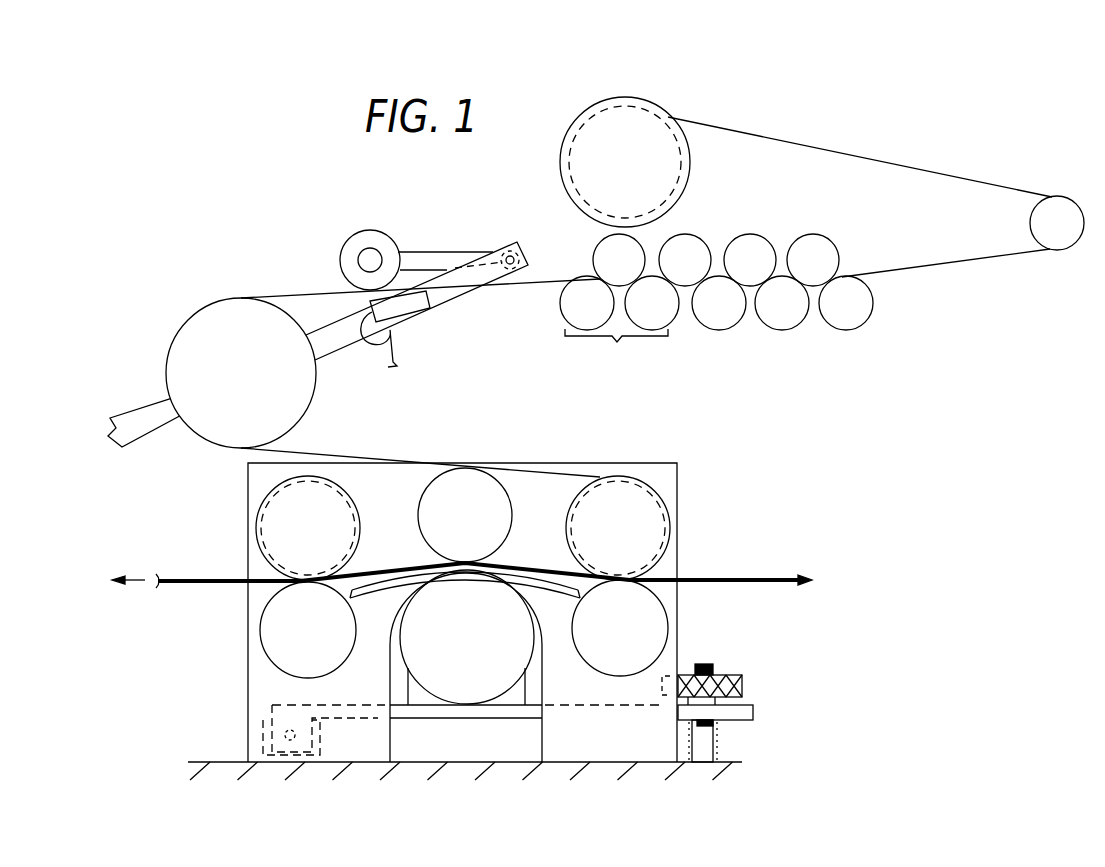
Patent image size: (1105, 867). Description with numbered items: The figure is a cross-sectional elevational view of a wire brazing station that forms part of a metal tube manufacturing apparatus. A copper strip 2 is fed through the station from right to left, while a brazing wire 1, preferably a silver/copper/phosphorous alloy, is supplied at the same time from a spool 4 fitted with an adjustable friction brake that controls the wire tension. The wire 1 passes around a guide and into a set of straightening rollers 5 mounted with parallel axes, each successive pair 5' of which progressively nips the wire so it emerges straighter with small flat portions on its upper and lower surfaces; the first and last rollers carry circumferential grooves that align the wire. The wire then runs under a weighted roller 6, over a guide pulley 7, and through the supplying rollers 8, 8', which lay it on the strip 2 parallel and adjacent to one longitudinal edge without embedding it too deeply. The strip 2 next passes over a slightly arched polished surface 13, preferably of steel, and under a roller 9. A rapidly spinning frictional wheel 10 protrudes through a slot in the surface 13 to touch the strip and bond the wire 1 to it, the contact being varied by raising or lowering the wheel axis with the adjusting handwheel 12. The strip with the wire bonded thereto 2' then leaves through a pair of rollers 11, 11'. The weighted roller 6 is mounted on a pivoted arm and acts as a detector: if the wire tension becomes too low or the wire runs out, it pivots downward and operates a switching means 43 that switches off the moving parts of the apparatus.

The brazing wire 1 is at (877, 158).
The copper strip 2 is at (485, 539).
The strip with the wire bonded thereto 2' is at (206, 549).
The spool 4 is at (598, 128).
The straightening rollers 5 is at (733, 306).
The pair of rollers 5' is at (619, 327).
The weighted roller 6 is at (377, 240).
The guide pulley 7 is at (240, 327).
The supplying roller 8 is at (618, 488).
The supplying roller 8' is at (650, 628).
The roller 9 is at (465, 487).
The frictional wheel 10 is at (486, 653).
The roller 11 is at (316, 491).
The roller 11' is at (271, 630).
The adjusting handwheel 12 is at (742, 675).
The arched polished surface 13 is at (565, 578).
The switching means 43 is at (413, 300).